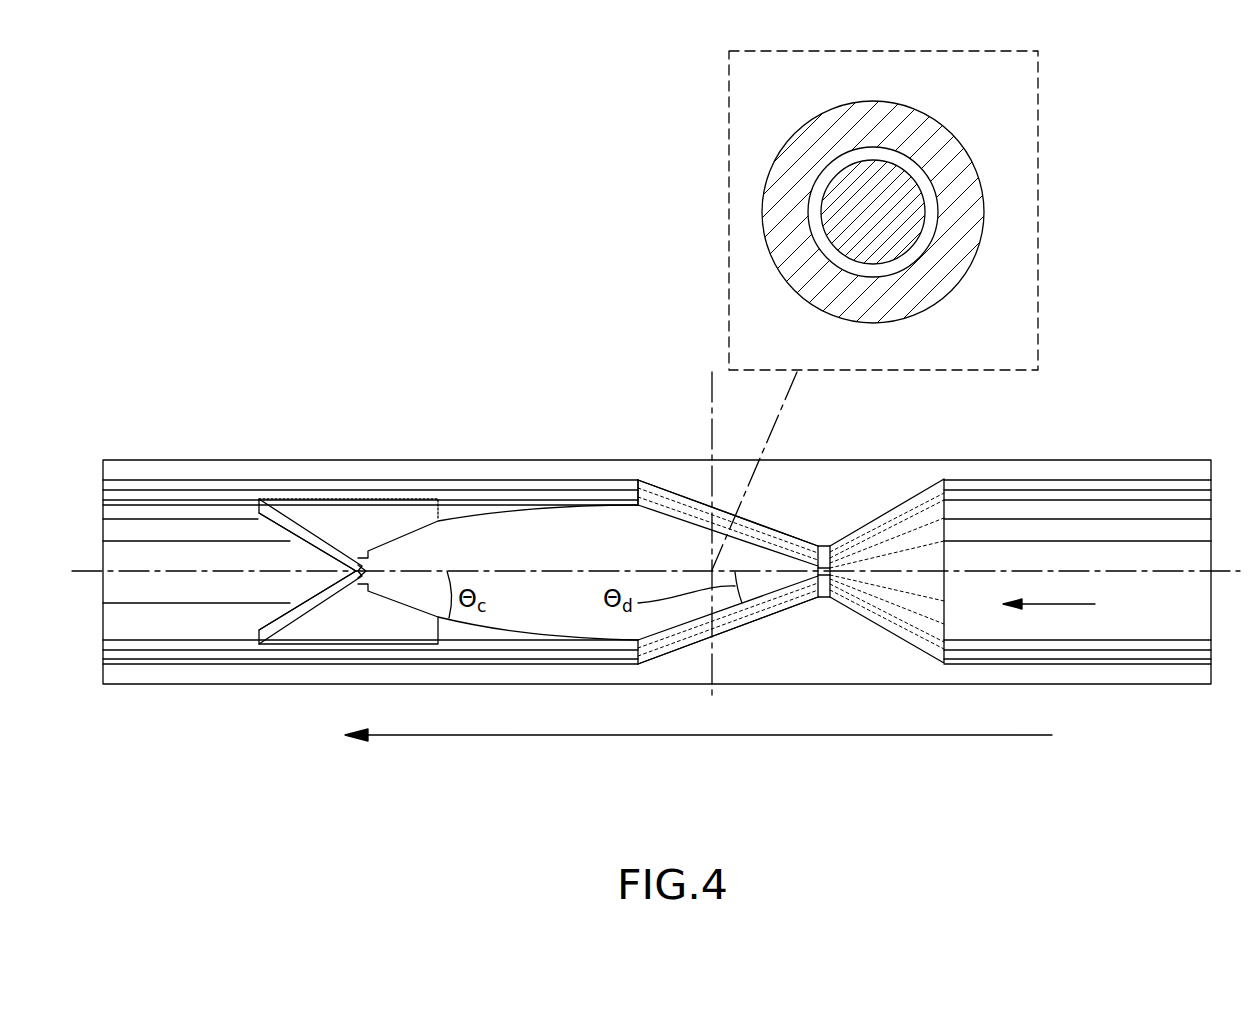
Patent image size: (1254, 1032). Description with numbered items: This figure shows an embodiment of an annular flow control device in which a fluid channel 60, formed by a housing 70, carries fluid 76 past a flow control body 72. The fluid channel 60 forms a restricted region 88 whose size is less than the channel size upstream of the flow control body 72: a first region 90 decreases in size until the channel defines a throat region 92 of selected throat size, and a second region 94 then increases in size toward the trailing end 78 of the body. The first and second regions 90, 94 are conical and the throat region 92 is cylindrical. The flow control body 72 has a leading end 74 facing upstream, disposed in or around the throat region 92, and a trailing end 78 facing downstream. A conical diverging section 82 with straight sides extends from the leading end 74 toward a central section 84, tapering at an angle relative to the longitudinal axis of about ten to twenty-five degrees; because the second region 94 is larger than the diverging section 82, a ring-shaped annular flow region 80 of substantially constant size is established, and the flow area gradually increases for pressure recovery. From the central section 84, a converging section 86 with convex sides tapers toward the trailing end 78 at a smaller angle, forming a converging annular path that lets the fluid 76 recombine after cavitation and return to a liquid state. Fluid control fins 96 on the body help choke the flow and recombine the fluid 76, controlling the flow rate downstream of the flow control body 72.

The fluid channel 60 is at (1095, 500).
The housing 70 is at (203, 467).
The flow control body 72 is at (572, 550).
The leading end 74 is at (842, 555).
The fluid 76 is at (1058, 604).
The trailing end 78 is at (358, 585).
The annular flow region 80 is at (777, 538).
The diverging section 82 is at (678, 607).
The central section 84 is at (615, 548).
The converging section 86 is at (477, 538).
The restricted region 88 is at (803, 762).
The first region 90 is at (913, 613).
The throat region 92 is at (822, 600).
The second region 94 is at (657, 493).
The fluid control fins 96 is at (342, 518).